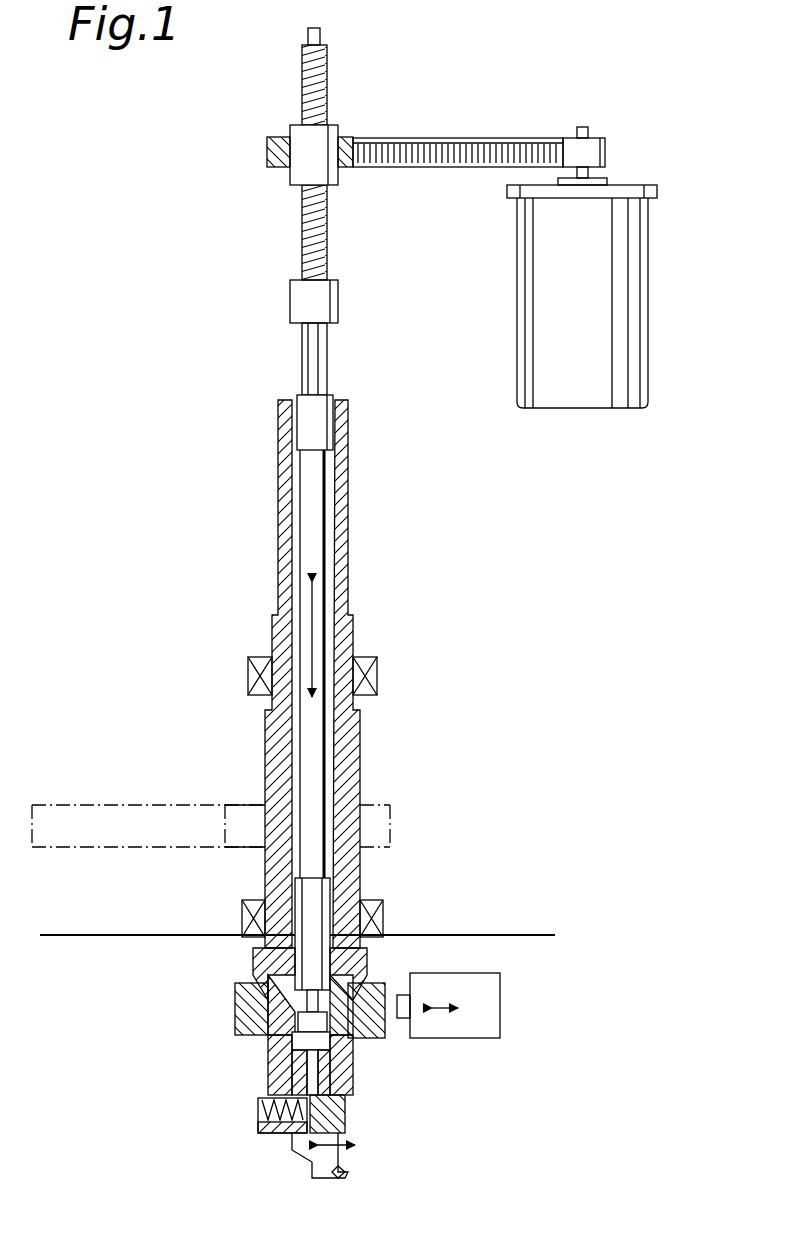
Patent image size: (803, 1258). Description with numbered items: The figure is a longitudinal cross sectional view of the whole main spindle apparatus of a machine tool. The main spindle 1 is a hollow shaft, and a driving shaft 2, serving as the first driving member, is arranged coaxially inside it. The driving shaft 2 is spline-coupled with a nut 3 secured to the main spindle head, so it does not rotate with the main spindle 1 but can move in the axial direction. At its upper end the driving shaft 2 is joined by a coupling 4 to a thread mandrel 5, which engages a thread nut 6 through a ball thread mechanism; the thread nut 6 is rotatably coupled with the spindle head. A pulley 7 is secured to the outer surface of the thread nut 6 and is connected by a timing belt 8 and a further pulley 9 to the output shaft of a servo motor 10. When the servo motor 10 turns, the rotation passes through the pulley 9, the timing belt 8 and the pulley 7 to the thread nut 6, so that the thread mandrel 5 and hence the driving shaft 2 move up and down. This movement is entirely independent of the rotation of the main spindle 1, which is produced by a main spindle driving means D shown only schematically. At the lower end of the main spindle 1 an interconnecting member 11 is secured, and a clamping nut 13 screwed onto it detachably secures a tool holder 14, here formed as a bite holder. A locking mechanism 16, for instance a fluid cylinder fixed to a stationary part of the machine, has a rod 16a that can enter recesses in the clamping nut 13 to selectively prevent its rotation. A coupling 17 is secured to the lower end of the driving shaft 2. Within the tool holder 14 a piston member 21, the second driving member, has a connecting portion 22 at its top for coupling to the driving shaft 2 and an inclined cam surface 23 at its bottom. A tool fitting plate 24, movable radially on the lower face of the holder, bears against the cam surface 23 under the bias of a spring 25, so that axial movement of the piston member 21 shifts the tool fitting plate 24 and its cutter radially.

The main spindle 1 is at (282, 480).
The driving shaft 2 is at (312, 543).
The nut 3 is at (300, 395).
The coupling 4 is at (298, 298).
The thread mandrel 5 is at (302, 220).
The thread nut 6 is at (332, 127).
The pulley 7 is at (281, 135).
The timing belt 8 is at (473, 140).
The pulley 9 is at (588, 145).
The servo motor 10 is at (560, 404).
The interconnecting member 11 is at (255, 978).
The clamping nut 13 is at (235, 1003).
The tool holder 14 is at (268, 1082).
The locking mechanism 16 is at (487, 995).
The rod 16a is at (401, 1020).
The coupling 17 is at (317, 893).
The piston member 21 is at (310, 1068).
The connecting portion 22 is at (347, 1048).
The inclined cam surface 23 is at (305, 1140).
The tool fitting plate 24 is at (330, 1130).
The spring 25 is at (263, 1117).
The main spindle driving means D is at (110, 812).